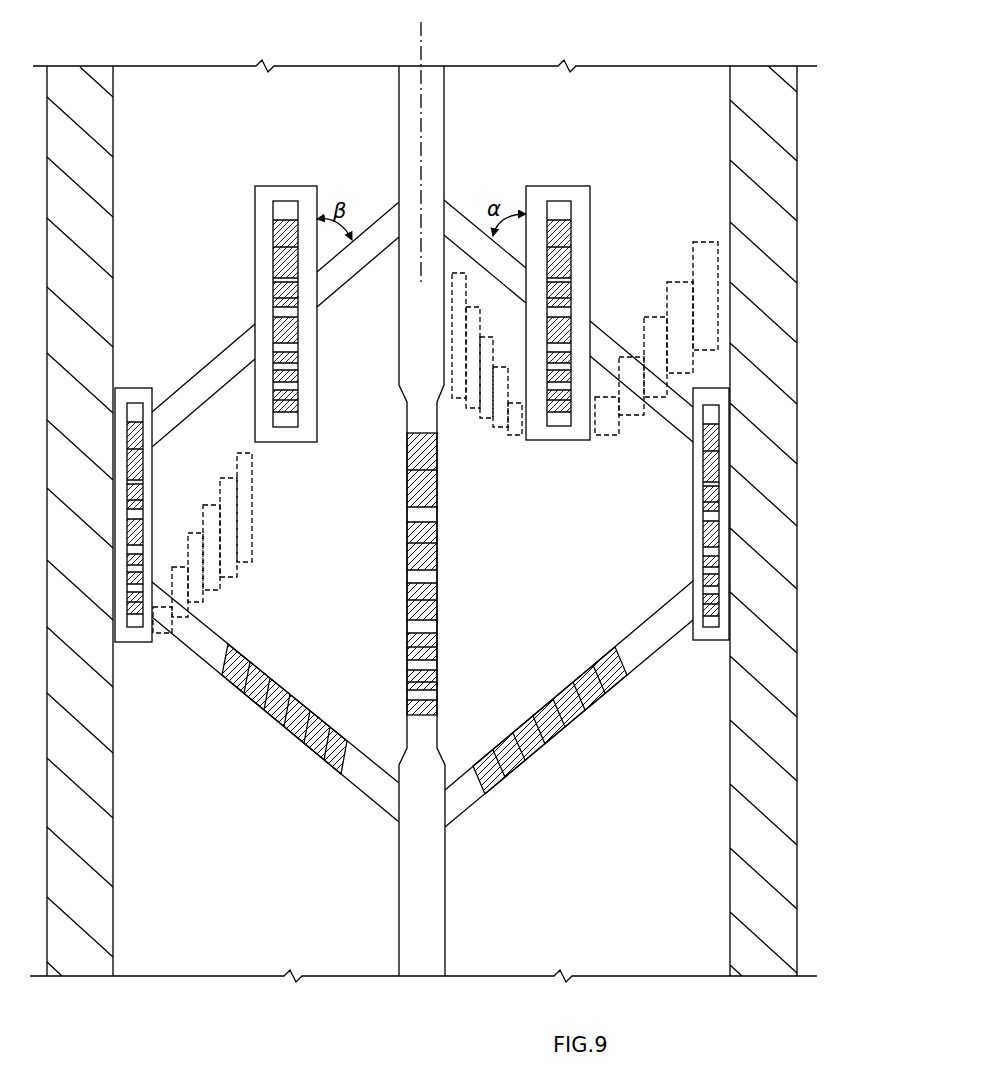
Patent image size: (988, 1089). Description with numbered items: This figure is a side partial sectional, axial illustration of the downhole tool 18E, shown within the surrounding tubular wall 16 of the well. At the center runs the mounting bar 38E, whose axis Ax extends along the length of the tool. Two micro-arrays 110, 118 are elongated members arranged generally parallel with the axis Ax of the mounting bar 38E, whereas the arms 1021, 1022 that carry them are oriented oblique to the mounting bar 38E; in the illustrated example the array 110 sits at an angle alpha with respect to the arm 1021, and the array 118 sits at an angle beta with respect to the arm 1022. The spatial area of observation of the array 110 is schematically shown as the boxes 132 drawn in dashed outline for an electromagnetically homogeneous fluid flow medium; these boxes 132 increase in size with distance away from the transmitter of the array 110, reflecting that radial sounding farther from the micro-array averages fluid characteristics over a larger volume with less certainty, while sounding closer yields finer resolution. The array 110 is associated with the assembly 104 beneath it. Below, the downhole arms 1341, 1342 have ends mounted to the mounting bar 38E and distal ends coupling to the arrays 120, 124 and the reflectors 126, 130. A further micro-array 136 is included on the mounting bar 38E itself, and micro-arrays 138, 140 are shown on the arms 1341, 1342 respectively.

The casing wall 16 is at (730, 912).
The downhole tool 18E is at (658, 791).
The mounting bar 38E is at (446, 108).
The axis Ax is at (422, 42).
The arm 1021 is at (458, 210).
The arm 1022 is at (386, 213).
The magnet stack 104 is at (563, 441).
The micro-array 110 is at (567, 186).
The micro-array 118 is at (255, 220).
The array 120 is at (708, 641).
The array 124 is at (143, 643).
The reflector 126 is at (693, 498).
The reflector 130 is at (152, 492).
The boxes 132 is at (699, 222).
The micro-array 136 is at (458, 566).
The micro-array 138 is at (593, 720).
The micro-array 140 is at (302, 764).
The downhole arm 1341 is at (472, 797).
The downhole arm 1342 is at (205, 661).